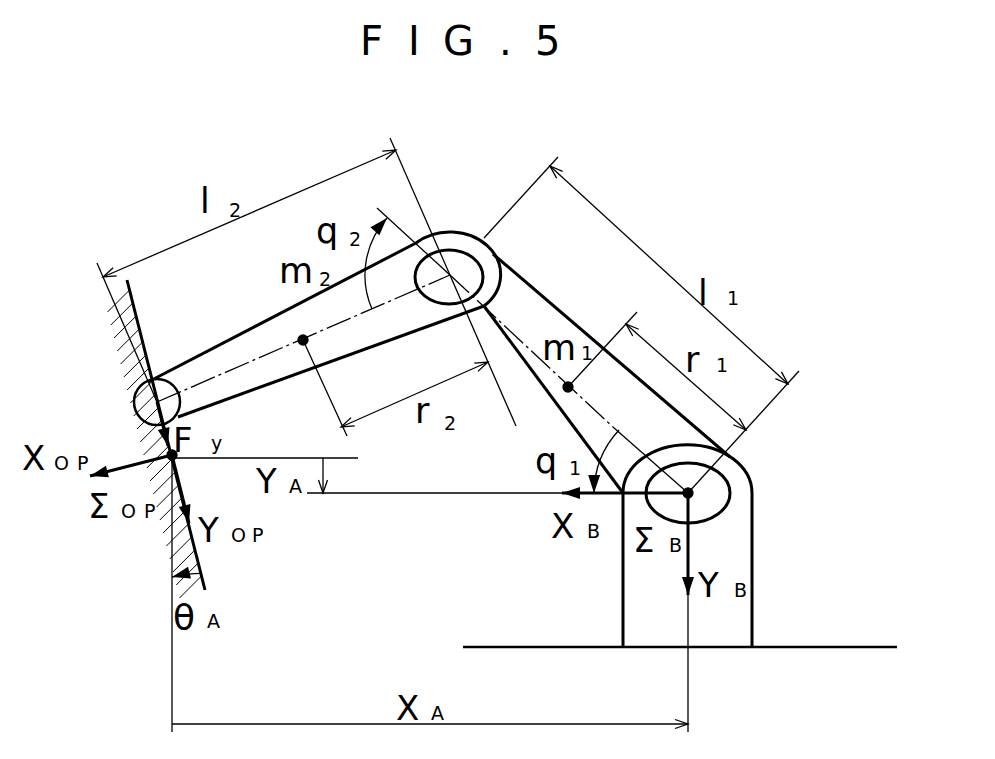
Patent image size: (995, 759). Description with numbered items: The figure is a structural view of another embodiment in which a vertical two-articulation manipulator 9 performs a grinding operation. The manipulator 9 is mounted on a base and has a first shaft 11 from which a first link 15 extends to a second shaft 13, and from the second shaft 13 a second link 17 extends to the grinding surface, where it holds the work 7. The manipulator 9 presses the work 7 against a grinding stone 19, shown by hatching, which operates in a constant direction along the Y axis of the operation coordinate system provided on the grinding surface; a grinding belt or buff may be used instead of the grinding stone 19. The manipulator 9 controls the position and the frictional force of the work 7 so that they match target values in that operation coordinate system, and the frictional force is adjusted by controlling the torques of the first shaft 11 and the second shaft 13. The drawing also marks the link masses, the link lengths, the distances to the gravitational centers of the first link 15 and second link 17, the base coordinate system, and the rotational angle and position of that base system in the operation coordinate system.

The work 7 is at (134, 408).
The vertical two-articulation manipulator 9 is at (707, 227).
The first shaft 11 is at (717, 518).
The second shaft 13 is at (455, 250).
The first link 15 is at (588, 277).
The second link 17 is at (232, 317).
The grinding stone 19 is at (138, 327).